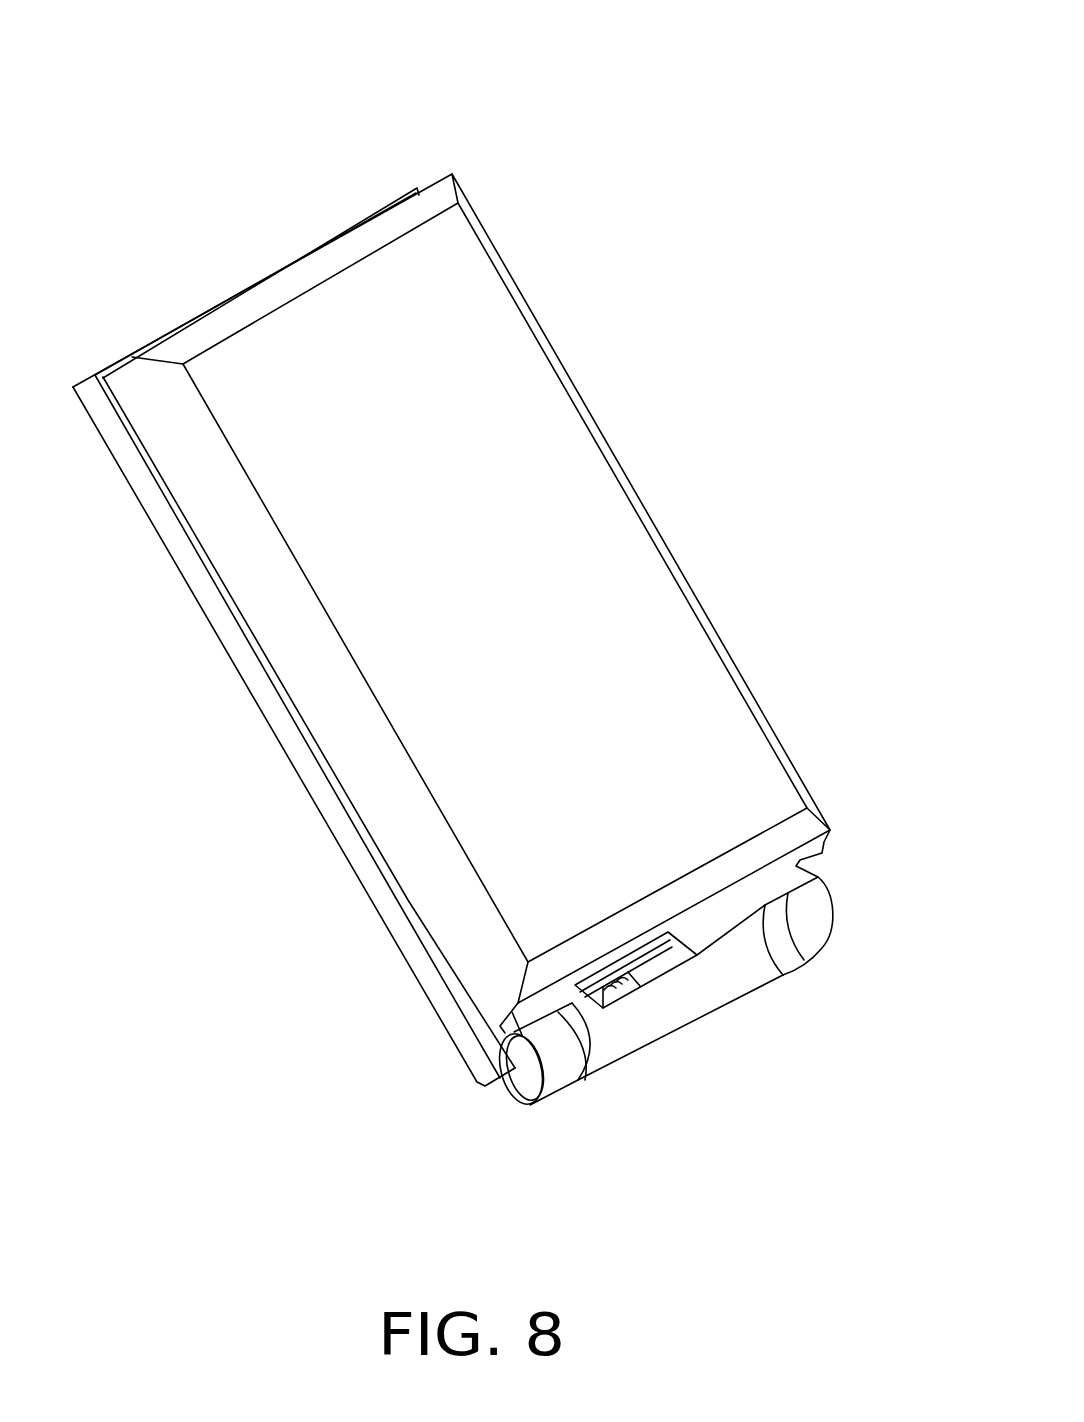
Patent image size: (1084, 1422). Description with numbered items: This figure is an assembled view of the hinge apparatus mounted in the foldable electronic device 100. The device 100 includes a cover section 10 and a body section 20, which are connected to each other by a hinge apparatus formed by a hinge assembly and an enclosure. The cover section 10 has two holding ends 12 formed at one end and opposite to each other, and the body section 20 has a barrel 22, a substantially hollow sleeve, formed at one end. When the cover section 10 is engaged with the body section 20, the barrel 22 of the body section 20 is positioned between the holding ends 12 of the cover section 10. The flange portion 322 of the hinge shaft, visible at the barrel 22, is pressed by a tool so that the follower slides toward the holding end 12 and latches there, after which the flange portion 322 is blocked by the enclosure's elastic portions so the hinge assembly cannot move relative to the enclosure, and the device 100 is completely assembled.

The foldable electronic device 100 is at (493, 39).
The cover section 10 is at (207, 585).
The body section 20 is at (521, 385).
The holding ends 12 is at (566, 1086).
The barrel 22 is at (737, 962).
The flange portion 322 is at (616, 1000).